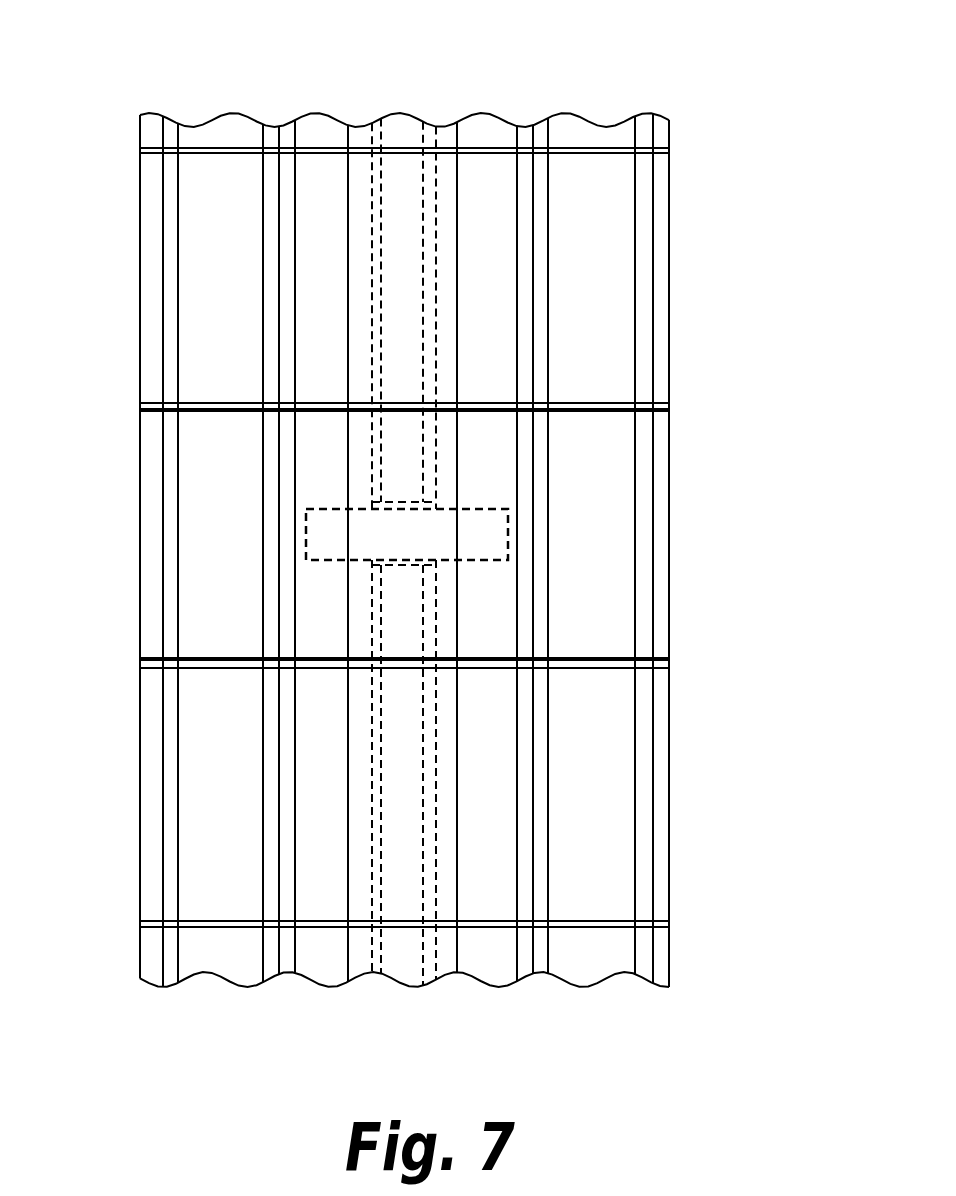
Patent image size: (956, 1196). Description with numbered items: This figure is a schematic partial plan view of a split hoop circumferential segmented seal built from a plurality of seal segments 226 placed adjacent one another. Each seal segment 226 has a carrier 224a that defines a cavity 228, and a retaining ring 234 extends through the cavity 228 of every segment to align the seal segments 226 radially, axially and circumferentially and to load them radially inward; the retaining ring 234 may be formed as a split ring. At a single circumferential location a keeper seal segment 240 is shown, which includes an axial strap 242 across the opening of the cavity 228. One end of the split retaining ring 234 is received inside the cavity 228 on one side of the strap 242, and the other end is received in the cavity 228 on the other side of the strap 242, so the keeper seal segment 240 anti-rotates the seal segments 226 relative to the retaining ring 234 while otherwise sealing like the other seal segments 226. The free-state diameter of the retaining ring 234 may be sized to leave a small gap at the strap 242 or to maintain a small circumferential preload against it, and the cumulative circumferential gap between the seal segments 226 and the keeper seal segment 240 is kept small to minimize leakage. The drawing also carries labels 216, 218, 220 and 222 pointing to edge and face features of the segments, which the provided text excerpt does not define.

The first panel section 216 is at (228, 135).
The second panel section 218 is at (597, 135).
The first edge portion 220 is at (172, 135).
The second edge portion 222 is at (645, 135).
The carrier 224a is at (323, 135).
The seal segment 226 is at (669, 140).
The cavity 228 is at (424, 125).
The retaining ring 234 is at (397, 135).
The keeper seal segment 240 is at (669, 433).
The axial strap 242 is at (318, 502).